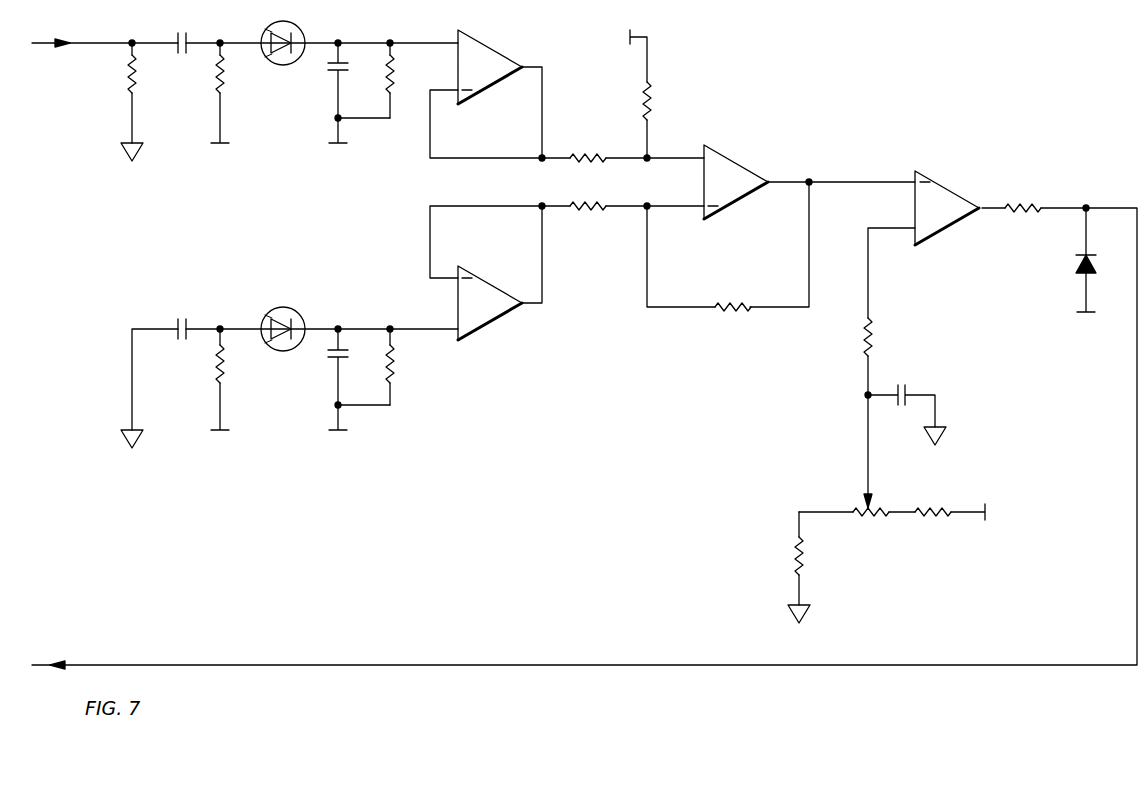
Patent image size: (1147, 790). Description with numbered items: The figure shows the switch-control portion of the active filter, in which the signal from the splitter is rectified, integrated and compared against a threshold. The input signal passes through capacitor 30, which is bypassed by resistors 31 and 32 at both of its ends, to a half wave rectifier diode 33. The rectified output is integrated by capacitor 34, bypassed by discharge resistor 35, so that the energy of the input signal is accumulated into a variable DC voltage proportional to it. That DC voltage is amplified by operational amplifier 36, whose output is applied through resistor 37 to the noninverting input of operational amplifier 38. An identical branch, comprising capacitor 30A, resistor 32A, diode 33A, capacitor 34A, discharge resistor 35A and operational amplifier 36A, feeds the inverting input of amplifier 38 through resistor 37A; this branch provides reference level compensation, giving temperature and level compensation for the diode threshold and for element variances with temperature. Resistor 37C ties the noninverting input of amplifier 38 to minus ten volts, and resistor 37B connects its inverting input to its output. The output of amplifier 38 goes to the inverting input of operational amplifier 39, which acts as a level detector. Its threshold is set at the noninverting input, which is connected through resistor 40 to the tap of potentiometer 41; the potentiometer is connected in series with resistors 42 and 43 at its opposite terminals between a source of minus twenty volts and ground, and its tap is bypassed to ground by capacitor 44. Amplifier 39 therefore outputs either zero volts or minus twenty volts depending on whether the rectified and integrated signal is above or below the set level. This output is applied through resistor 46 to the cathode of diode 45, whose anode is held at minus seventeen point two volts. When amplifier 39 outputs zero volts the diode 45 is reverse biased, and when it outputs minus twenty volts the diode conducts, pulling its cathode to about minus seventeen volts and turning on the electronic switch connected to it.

The capacitor 30 is at (186, 32).
The resistor 31 is at (126, 76).
The resistor 32 is at (226, 78).
The photodiode 33 is at (268, 26).
The capacitor 34 is at (328, 72).
The discharge resistor 35 is at (396, 84).
The operational amplifier 36 is at (498, 50).
The resistor 37 is at (594, 152).
The resistor 37A is at (592, 214).
The resistor 37B is at (736, 312).
The resistor 37C is at (653, 102).
The operational amplifier 38 is at (746, 164).
The operational amplifier 39 is at (956, 188).
The resistor 40 is at (872, 336).
The potentiometer 41 is at (864, 520).
The resistor 42 is at (790, 558).
The resistor 43 is at (926, 520).
The capacitor 44 is at (902, 392).
The diode 45 is at (1075, 266).
The resistor 46 is at (1034, 204).
The capacitor 30A is at (182, 318).
The resistor 32A is at (215, 358).
The diode 33A is at (300, 310).
The capacitor 34A is at (330, 360).
The discharge resistor 35A is at (396, 378).
The operational amplifier 36A is at (500, 324).